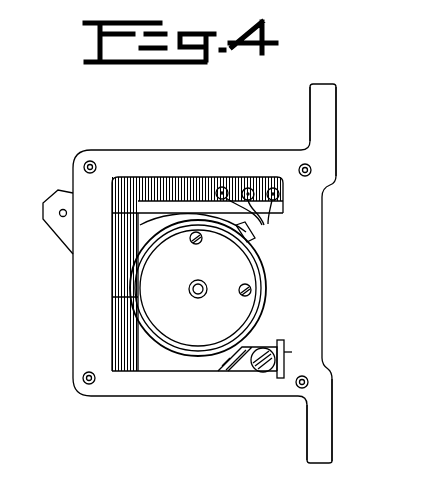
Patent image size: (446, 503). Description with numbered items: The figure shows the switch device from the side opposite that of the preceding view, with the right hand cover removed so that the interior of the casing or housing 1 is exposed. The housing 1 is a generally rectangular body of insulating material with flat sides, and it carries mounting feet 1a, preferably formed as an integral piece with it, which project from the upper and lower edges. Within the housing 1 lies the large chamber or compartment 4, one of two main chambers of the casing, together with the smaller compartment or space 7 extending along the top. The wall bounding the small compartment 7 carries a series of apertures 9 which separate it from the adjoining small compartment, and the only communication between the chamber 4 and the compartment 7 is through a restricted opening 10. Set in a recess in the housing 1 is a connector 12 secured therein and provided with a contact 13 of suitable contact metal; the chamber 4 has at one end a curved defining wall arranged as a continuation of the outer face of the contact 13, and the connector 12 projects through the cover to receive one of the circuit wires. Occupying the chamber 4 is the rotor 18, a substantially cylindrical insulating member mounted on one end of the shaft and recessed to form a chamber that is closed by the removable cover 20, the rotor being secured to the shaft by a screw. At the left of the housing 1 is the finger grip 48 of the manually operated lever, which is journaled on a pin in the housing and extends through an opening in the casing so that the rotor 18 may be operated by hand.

The casing or housing 1 is at (77, 343).
The mounting feet 1a is at (318, 107).
The chamber or compartment 4 is at (148, 364).
The smaller compartment or space 7 is at (176, 178).
The apertures 9 is at (97, 110).
The restricted opening 10 is at (118, 217).
The connector 12 is at (292, 352).
The contact 13 is at (236, 373).
The rotor 18 is at (136, 298).
The removable cover 20 is at (198, 288).
The finger grip 48 is at (56, 243).